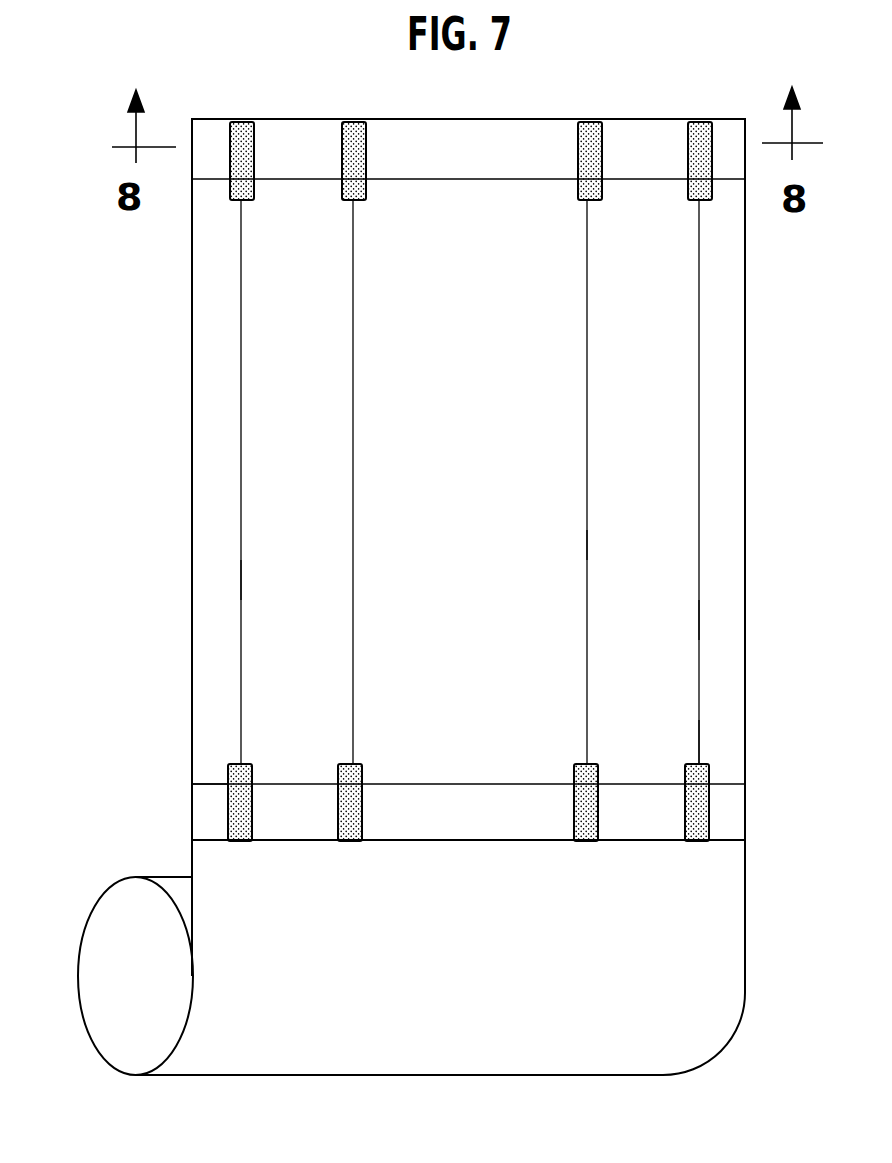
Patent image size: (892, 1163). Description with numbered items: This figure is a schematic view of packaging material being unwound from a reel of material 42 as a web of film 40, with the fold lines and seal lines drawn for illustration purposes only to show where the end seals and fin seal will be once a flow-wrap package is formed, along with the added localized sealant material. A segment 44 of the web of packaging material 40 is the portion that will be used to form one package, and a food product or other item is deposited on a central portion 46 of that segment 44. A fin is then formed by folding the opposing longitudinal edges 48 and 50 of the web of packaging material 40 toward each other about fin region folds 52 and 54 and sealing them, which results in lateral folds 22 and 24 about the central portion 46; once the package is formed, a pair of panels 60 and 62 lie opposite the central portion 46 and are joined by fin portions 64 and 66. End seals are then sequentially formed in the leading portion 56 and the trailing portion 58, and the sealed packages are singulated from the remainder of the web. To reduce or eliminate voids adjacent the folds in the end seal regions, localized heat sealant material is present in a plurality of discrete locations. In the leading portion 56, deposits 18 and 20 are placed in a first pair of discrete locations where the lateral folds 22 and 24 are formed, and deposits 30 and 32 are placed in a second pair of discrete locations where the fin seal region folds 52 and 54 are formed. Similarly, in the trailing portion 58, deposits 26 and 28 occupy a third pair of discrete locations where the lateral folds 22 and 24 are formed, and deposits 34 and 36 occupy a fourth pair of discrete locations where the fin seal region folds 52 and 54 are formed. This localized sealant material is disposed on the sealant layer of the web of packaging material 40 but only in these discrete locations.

The deposit of localized heat sealant material 18 is at (352, 138).
The deposit of localized heat sealant material 20 is at (588, 130).
The lateral edge fold 22 is at (353, 439).
The lateral edge fold 24 is at (587, 496).
The deposit of localized heat sealant material 26 is at (346, 842).
The deposit of localized heat sealant material 28 is at (583, 842).
The deposit of localized heat sealant material 30 is at (245, 130).
The deposit of localized heat sealant material 32 is at (698, 128).
The deposit of localized heat sealant material 34 is at (240, 842).
The deposit of localized heat sealant material 36 is at (693, 842).
The web of film 40 is at (192, 857).
The reel of material 42 is at (93, 932).
The segment 44 is at (745, 672).
The central portion 46 is at (562, 545).
The longitudinal edge 48 is at (192, 473).
The longitudinal edge 50 is at (745, 422).
The fin region fold 52 is at (241, 336).
The fin region fold 54 is at (699, 322).
The leading portion 56 is at (207, 136).
The trailing portion 58 is at (197, 812).
The panel 60 is at (270, 583).
The panel 62 is at (638, 620).
The fin portion 64 is at (208, 715).
The fin portion 66 is at (727, 738).